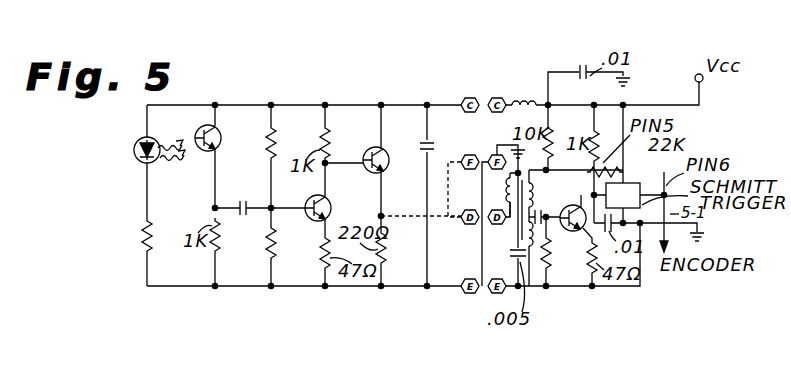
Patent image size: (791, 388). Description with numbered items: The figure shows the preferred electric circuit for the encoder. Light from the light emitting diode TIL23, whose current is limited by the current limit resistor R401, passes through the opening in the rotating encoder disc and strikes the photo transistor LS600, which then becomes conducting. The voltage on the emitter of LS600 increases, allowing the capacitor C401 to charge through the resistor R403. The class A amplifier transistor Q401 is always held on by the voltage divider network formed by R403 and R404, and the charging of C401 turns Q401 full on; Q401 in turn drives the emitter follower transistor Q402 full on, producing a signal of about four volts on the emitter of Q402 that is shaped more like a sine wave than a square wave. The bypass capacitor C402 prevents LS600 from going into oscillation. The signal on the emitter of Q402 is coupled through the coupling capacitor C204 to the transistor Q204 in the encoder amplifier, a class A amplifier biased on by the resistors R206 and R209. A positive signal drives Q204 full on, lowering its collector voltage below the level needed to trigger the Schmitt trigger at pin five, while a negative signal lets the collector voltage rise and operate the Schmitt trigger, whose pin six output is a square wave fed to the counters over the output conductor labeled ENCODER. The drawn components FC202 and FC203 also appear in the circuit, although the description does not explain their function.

The light emitting diode TIL23 is at (134, 153).
The photo transistor LS600 is at (200, 152).
The current limit resistor R401 is at (143, 228).
The capacitor C401 is at (248, 200).
The resistor R403 is at (268, 153).
The resistor R404 is at (265, 230).
The class A amplifier transistor Q401 is at (311, 224).
The emitter follower transistor Q402 is at (371, 148).
The bypass capacitor C402 is at (445, 156).
The inductor / ferrite coil FC202 is at (522, 94).
The bias resistor R206 is at (542, 158).
The transformer / ferrite coil FC203 is at (508, 210).
The coupling capacitor C204 is at (536, 229).
The bias resistor R209 is at (550, 264).
The class A amplifier transistor Q204 is at (583, 228).